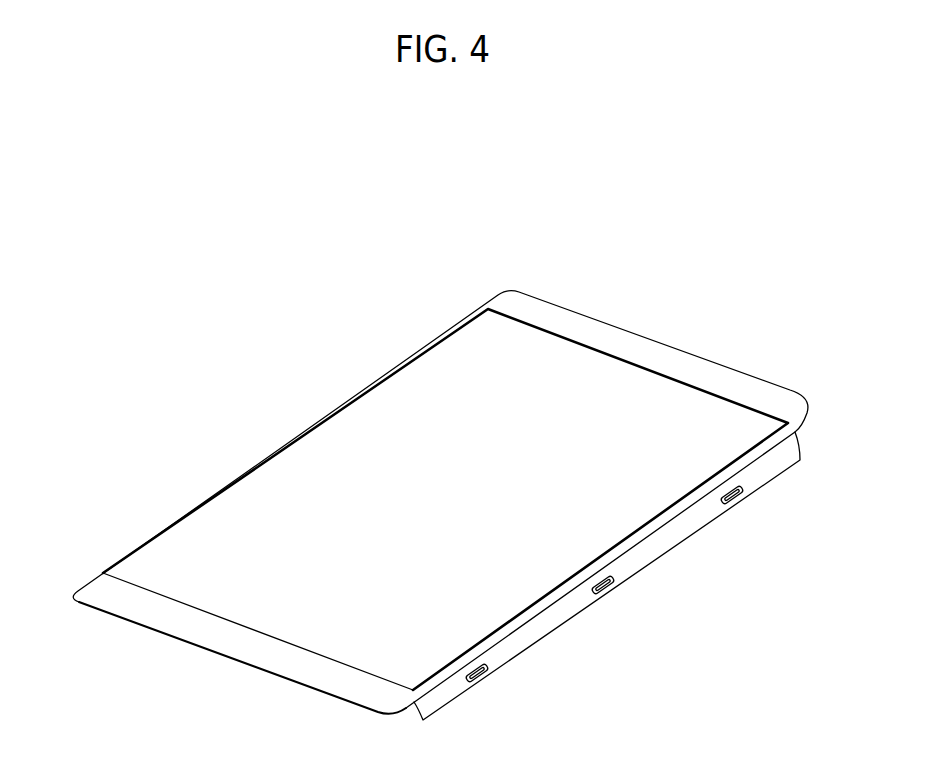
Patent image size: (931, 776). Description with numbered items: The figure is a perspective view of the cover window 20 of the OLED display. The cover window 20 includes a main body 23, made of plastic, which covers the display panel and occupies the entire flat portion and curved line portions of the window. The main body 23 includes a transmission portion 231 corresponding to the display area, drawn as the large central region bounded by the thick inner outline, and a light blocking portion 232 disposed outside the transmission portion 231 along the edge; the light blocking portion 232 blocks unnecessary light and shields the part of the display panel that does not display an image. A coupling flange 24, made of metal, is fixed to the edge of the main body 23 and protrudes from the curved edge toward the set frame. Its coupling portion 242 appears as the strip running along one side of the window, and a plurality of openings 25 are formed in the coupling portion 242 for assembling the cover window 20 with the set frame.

The cover window 20 is at (307, 402).
The main body 23 is at (458, 235).
The transmission portion 231 is at (448, 346).
The light blocking portion 232 is at (505, 298).
The coupling flange 24 is at (582, 622).
The coupling portion 242 is at (653, 550).
The openings 25 is at (733, 503).